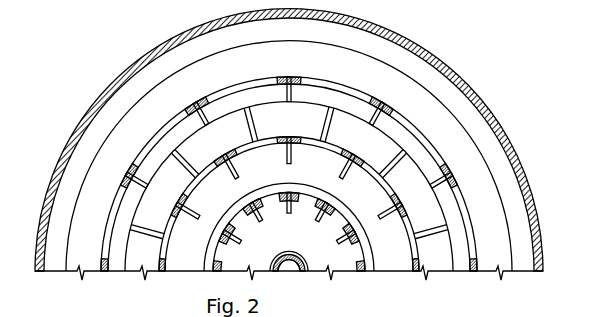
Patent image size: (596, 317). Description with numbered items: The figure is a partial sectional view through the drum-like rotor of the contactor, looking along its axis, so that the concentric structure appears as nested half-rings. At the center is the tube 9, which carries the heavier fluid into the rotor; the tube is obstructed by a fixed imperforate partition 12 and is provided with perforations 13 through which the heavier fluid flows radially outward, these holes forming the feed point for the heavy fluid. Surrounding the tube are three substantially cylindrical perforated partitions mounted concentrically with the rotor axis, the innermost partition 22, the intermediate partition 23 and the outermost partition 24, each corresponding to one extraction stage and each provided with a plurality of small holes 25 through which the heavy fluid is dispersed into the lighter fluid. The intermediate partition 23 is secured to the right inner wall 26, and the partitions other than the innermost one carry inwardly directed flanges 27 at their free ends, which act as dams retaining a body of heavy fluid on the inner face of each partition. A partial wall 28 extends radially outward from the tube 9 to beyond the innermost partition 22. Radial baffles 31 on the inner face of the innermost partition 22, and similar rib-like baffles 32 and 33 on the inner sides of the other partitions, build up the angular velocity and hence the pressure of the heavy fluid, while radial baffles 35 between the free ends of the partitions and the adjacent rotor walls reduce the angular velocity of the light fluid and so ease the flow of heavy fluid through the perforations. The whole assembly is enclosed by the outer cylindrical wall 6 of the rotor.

The outer cylindrical wall 6 is at (334, 22).
The right inner wall 26 is at (345, 48).
The partition 24 is at (237, 85).
The baffles 33 is at (206, 128).
The flanges 27 is at (261, 105).
The holes 25 is at (194, 178).
The radial baffles 35 is at (142, 214).
The partition 23 is at (338, 137).
The baffles 32 is at (234, 180).
The partial wall 28 is at (322, 184).
The partition 22 is at (372, 271).
The radial baffles 31 is at (319, 216).
The tube 9 is at (273, 260).
The perforations 13 is at (305, 270).
The partition 12 is at (291, 272).